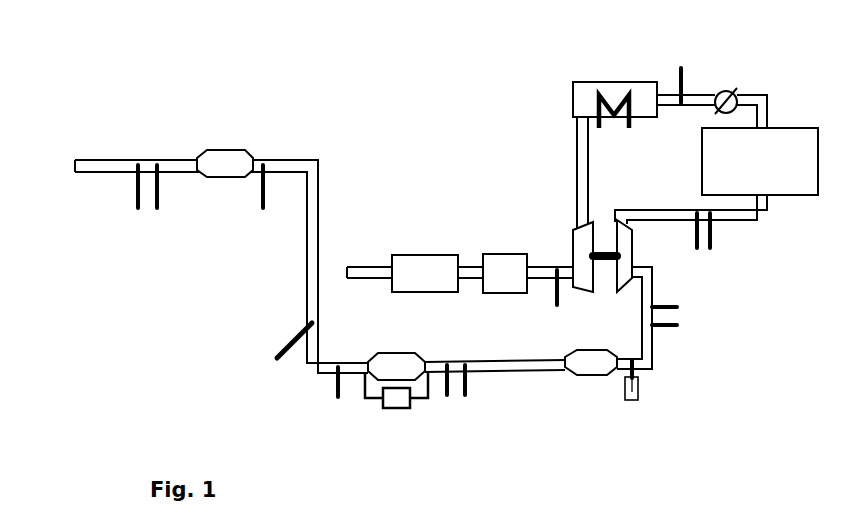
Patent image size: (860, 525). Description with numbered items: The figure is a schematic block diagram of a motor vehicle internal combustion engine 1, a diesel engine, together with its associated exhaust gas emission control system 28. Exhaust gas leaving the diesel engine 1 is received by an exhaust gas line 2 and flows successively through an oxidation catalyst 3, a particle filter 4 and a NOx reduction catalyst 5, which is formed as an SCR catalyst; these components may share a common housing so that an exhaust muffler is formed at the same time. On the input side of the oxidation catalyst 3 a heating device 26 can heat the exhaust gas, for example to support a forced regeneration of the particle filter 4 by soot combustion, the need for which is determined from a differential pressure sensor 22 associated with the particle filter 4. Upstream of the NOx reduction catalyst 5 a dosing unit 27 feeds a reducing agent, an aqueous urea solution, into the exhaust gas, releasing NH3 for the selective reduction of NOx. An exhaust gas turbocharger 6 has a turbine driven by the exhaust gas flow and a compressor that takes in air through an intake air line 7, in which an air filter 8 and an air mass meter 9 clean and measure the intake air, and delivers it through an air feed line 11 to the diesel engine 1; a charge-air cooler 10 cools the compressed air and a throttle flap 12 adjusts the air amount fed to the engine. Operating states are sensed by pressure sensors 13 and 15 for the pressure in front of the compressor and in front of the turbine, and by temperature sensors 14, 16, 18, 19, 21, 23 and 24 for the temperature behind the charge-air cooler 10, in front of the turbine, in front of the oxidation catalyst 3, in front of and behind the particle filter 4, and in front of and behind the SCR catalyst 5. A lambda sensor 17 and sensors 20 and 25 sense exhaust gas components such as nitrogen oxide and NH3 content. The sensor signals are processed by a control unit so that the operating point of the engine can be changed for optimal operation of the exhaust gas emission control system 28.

The internal combustion engine 1 is at (765, 170).
The exhaust gas line 2 is at (312, 312).
The oxidation catalyst 3 is at (595, 370).
The particle filter 4 is at (401, 374).
The NOx reduction catalyst 5 is at (229, 172).
The exhaust gas turbocharger 6 is at (555, 227).
The intake air line 7 is at (373, 267).
The air filter 8 is at (430, 282).
The air mass meter 9 is at (509, 282).
The charge-air cooler 10 is at (577, 102).
The air feed line 11 is at (580, 148).
The throttle flap 12 is at (731, 90).
The pressure sensor 13 is at (557, 303).
The temperature sensor 14 is at (680, 78).
The pressure sensor 15 is at (697, 248).
The temperature sensor 16 is at (710, 248).
The lambda sensor 17 is at (677, 307).
The temperature sensor 18 is at (677, 325).
The temperature sensor 19 is at (465, 395).
The sensor 20 is at (447, 395).
The temperature sensor 21 is at (338, 397).
The differential pressure sensor 22 is at (402, 398).
The temperature sensor 23 is at (263, 207).
The temperature sensor 24 is at (157, 207).
The sensor 25 is at (138, 207).
The heating device 26 is at (632, 400).
The dosing unit 27 is at (272, 355).
The exhaust gas emission control system 28 is at (235, 295).